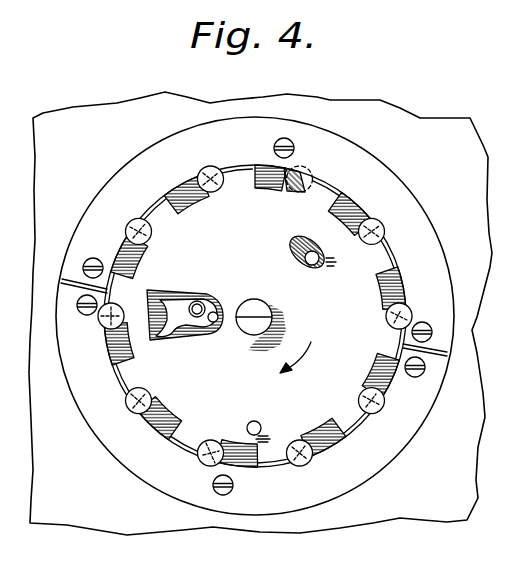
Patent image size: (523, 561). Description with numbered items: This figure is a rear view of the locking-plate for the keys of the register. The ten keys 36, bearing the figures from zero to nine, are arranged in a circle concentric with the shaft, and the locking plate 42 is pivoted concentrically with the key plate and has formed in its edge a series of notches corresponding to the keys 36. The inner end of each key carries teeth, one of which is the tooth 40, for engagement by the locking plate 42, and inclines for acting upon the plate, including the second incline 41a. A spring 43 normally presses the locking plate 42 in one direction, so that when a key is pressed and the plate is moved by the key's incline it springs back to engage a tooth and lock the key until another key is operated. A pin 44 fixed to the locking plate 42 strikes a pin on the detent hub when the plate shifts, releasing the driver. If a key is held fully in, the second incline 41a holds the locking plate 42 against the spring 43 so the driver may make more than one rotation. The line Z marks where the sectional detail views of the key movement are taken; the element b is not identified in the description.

The key 36 is at (201, 167).
The tooth 40 is at (217, 182).
The second incline 41a is at (318, 177).
The locking plate 42 is at (255, 316).
The spring 43 is at (183, 323).
The pin 44 is at (258, 424).
The pin hole b is at (309, 263).
The section line z-z Z is at (184, 180).